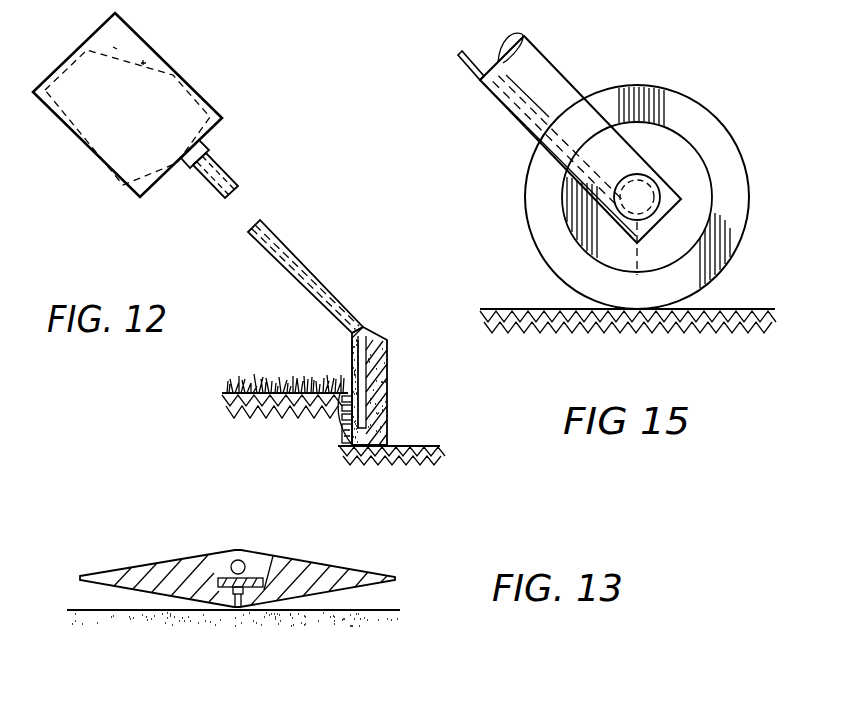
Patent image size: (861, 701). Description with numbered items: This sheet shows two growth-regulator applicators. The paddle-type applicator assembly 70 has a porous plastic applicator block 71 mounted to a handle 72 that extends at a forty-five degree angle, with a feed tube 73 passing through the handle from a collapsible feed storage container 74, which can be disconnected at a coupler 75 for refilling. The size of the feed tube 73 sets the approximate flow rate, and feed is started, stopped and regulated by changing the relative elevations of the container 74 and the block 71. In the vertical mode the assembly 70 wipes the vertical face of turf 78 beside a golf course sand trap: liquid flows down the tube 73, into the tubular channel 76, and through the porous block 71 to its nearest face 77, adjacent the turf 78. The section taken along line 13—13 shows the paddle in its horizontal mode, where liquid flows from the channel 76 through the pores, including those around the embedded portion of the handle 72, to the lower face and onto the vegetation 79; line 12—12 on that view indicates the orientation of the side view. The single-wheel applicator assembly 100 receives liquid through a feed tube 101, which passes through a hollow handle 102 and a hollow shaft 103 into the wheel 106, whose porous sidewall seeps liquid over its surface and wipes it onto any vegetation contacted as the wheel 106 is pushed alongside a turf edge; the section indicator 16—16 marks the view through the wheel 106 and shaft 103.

In FIG. 12, the paddle-type applicator assembly 70 is at (283, 154).
In FIG. 13, the paddle-type applicator assembly 70 is at (126, 520).
In FIG. 12, the porous plastic applicator block 71 is at (386, 431).
In FIG. 13, the porous plastic applicator block 71 is at (322, 562).
In FIG. 12, the handle 72 is at (281, 236).
In FIG. 13, the handle 72 is at (233, 608).
In FIG. 12, the feed tube 73 is at (316, 263).
In FIG. 12, the collapsible feed storage container 74 is at (167, 45).
In FIG. 12, the coupler 75 is at (202, 152).
In FIG. 12, the tubular channel 76 is at (367, 403).
In FIG. 13, the tubular channel 76 is at (232, 556).
In FIG. 12, the face of porous block 77 is at (328, 426).
In FIG. 12, the turf 78 is at (328, 447).
In FIG. 13, the vegetation 79 is at (382, 611).
In FIG. 13, the section line 12- 12 is at (240, 507).
In FIG. 12, the section line 13- 13 is at (277, 355).
In FIG. 15, the section line 16- 16 is at (457, 18).
In FIG. 15, the applicator assembly 100 is at (642, 49).
In FIG. 15, the feed tube 101 is at (466, 67).
In FIG. 15, the hollow handle 102 is at (547, 58).
In FIG. 15, the hollow shaft 103 is at (654, 182).
In FIG. 15, the wheel 106 is at (719, 124).